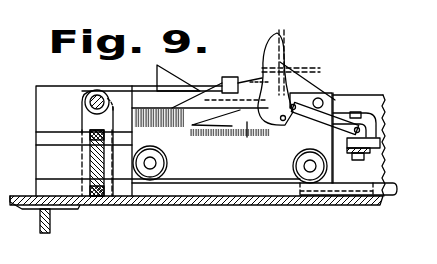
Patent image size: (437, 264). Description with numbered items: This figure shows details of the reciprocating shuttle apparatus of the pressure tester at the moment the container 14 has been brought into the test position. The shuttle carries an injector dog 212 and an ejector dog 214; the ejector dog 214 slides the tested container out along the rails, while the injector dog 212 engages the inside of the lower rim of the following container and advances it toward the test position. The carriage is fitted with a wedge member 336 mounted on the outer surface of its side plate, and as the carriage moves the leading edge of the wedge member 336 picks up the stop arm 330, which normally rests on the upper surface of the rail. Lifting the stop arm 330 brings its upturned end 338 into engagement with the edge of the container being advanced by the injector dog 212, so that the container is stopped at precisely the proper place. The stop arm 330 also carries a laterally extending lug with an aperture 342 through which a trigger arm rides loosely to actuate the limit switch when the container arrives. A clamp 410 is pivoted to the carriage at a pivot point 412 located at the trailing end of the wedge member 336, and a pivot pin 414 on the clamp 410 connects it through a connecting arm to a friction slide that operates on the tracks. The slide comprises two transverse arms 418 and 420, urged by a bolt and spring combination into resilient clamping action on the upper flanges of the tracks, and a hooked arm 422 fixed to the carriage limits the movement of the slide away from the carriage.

The stop arm 330 is at (133, 100).
The ejector dog 214 is at (163, 67).
The aperture 342 is at (226, 78).
The upturned end 338 is at (271, 58).
The container 14 is at (286, 44).
The clamp 410 is at (292, 104).
The injector dog 212 is at (282, 69).
The pivot pin 414 is at (303, 100).
The hooked arm 422 is at (341, 107).
The transverse arm 420 is at (383, 133).
The transverse arm 418 is at (368, 150).
The wedge member 336 is at (243, 129).
The pivot point 412 is at (290, 140).